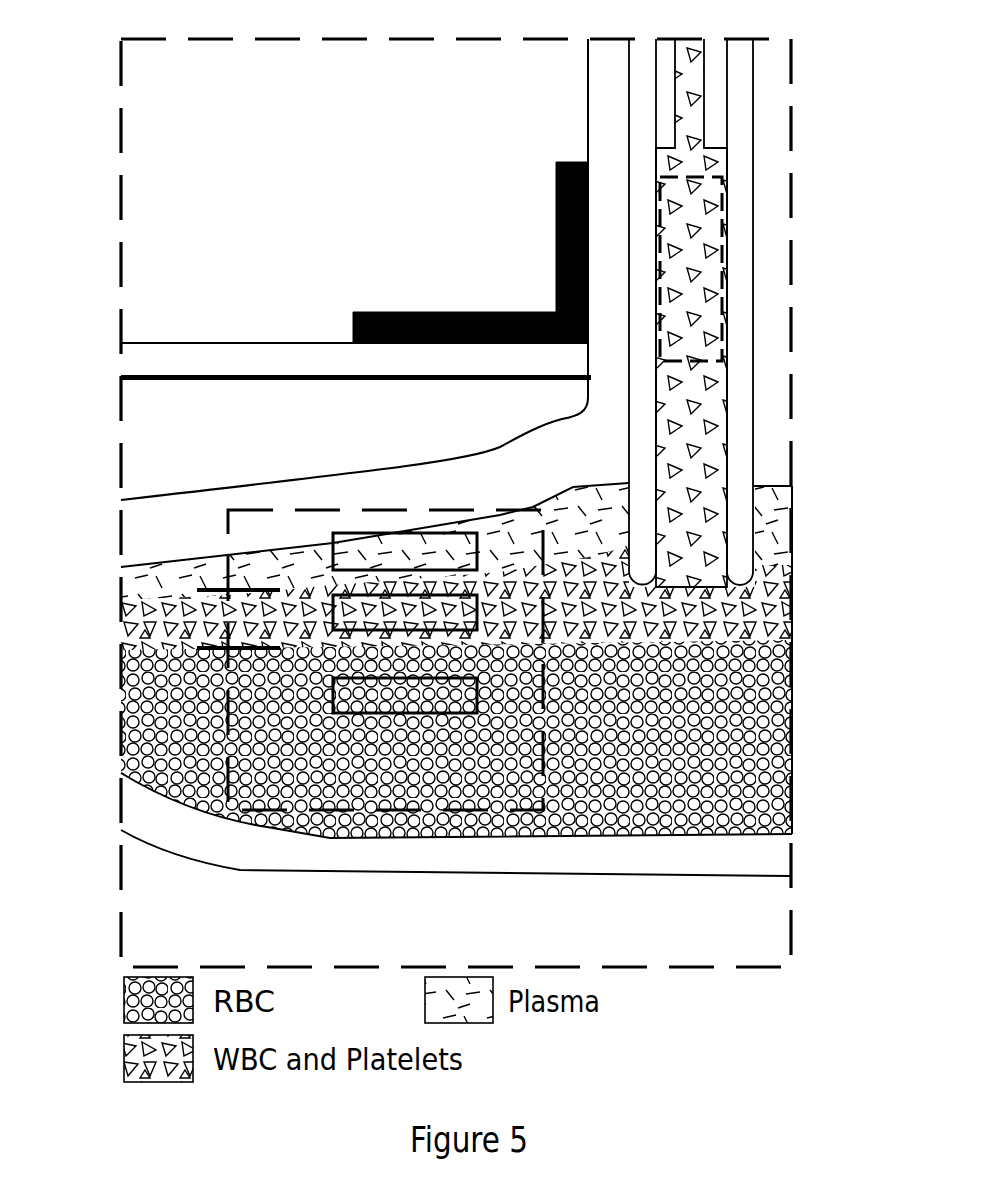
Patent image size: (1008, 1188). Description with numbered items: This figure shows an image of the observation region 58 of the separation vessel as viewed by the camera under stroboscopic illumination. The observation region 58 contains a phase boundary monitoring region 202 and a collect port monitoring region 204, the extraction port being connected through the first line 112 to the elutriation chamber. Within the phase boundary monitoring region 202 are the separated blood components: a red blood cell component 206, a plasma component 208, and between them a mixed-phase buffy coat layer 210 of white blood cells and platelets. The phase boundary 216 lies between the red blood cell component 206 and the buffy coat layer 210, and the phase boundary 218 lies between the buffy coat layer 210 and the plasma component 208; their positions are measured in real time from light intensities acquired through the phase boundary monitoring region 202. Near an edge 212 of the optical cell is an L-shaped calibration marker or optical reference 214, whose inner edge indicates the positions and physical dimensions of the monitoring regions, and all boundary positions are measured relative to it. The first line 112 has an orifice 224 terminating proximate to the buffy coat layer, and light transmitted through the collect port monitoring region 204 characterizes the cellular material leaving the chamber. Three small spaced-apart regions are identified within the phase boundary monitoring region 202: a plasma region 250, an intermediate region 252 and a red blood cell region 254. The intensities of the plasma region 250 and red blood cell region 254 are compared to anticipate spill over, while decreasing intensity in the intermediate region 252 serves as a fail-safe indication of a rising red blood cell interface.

The observation region 58 is at (778, 927).
The first line 112 is at (755, 438).
The phase boundary monitoring region 202 is at (275, 510).
The collect port monitoring region 204 is at (720, 252).
The red blood cell component 206 is at (778, 785).
The plasma component 208 is at (777, 500).
The mixed-phase buffy coat layer 210 is at (790, 594).
The edge of the optical cell 212 is at (193, 373).
The L-shaped calibration marker or optical reference 214 is at (440, 313).
The phase boundary between red blood cell component and buffy coat layer 216 is at (233, 647).
The phase boundary between buffy coat layer and plasma component 218 is at (233, 588).
The orifice 224 is at (692, 567).
The plasma region 250 is at (387, 533).
The intermediate region 252 is at (470, 592).
The red blood cell region 254 is at (337, 697).